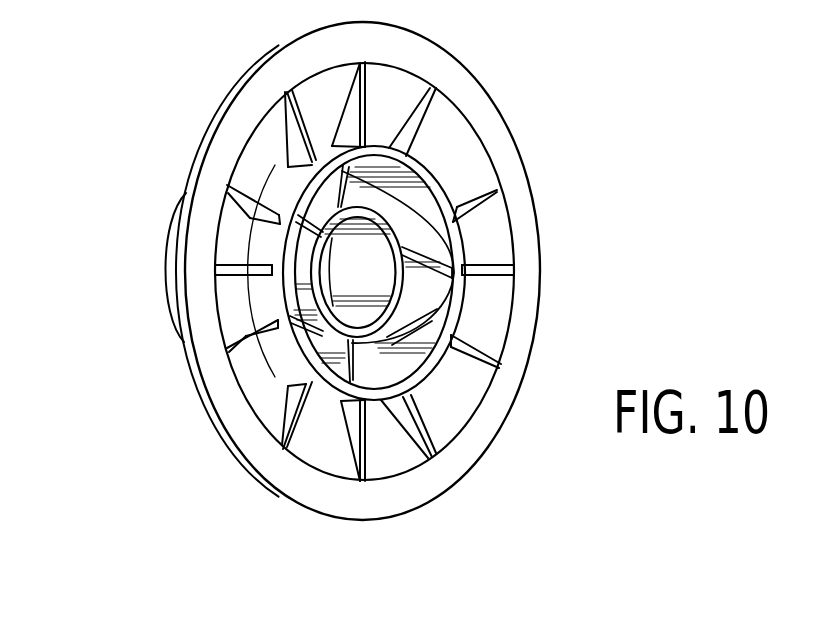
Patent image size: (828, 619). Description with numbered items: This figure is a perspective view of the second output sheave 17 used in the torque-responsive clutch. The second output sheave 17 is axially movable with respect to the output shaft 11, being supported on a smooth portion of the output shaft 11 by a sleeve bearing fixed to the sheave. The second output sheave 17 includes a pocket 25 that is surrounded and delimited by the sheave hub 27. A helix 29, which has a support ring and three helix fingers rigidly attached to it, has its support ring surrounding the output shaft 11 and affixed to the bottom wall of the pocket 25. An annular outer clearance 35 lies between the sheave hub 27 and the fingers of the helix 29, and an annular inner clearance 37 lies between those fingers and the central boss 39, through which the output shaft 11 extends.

The output shaft 11 is at (138, 386).
The second output sheave 17 is at (158, 143).
The pocket 25 is at (392, 190).
The sheave hub 27 is at (358, 440).
The helix 29 is at (428, 273).
The annular outer clearance 35 is at (437, 325).
The annular inner clearance 37 is at (402, 308).
The central boss 39 is at (312, 288).